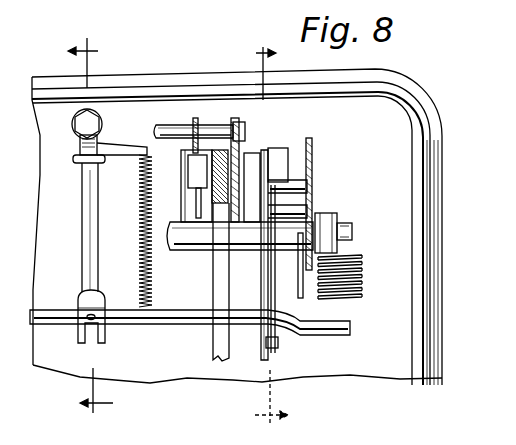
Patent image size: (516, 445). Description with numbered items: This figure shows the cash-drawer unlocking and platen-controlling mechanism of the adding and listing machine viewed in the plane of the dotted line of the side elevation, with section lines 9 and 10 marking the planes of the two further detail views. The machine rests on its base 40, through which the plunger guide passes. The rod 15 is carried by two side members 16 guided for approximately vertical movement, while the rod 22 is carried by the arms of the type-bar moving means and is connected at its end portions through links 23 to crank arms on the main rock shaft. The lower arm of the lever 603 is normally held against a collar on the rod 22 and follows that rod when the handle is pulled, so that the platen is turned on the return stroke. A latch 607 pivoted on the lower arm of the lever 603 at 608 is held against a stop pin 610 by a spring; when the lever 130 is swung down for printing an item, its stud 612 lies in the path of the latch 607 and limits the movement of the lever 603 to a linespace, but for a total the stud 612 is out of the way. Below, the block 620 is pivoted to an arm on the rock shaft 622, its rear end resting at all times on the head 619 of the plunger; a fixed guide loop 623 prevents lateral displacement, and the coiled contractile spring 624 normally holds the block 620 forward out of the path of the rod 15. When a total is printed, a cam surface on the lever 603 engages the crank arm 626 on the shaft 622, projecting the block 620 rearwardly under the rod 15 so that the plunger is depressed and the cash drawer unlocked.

The line 9— 9 is at (271, 232).
The line 10— 10 is at (90, 224).
The rod 15 is at (155, 128).
The side member 16 is at (233, 118).
The rod 22 is at (173, 222).
The link 23 is at (300, 265).
The base 40 is at (162, 78).
The lever 130 is at (260, 362).
The lever 603 is at (309, 168).
The latch 607 is at (268, 278).
The pivot 608 is at (293, 210).
The stop pin 610 is at (293, 183).
The stud 612 is at (278, 342).
The head 619 is at (83, 123).
The block 620 is at (90, 190).
The rock shaft 622 is at (50, 318).
The guide loop 623 is at (75, 160).
The spring 624 is at (137, 247).
The crank arm 626 is at (342, 334).